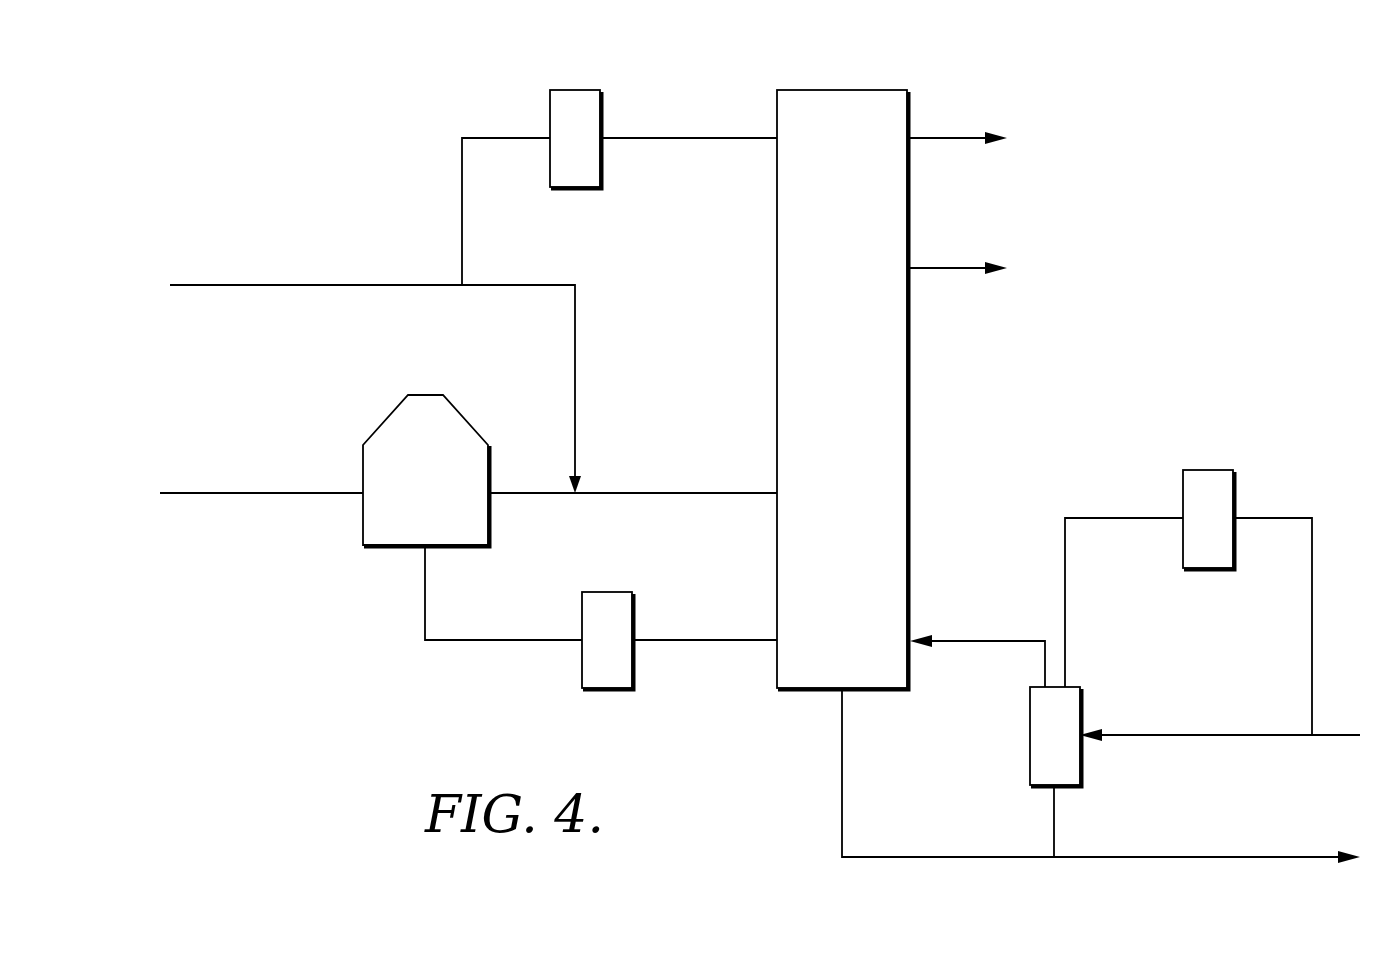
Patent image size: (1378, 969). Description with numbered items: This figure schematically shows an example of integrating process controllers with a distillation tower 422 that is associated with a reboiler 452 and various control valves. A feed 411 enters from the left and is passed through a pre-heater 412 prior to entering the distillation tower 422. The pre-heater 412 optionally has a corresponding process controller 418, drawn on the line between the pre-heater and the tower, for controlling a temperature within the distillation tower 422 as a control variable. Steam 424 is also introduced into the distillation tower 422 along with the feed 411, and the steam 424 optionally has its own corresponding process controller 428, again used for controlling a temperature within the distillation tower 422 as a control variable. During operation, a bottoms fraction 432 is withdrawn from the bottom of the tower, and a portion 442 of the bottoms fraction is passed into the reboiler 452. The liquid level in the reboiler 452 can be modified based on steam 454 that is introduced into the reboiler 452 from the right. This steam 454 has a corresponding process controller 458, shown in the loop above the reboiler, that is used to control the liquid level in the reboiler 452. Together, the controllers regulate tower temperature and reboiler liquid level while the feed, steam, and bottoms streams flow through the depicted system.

The feed 411 is at (252, 493).
The pre-heater 412 is at (446, 499).
The process controller 418 is at (606, 592).
The distillation tower 422 is at (862, 399).
The steam 424 is at (252, 285).
The process controller 428 is at (585, 90).
The bottoms fraction 432 is at (842, 790).
The portion of the bottoms fraction 442 is at (1054, 820).
The reboiler 452 is at (1030, 737).
The steam 454 is at (1178, 735).
The process controller 458 is at (1206, 470).